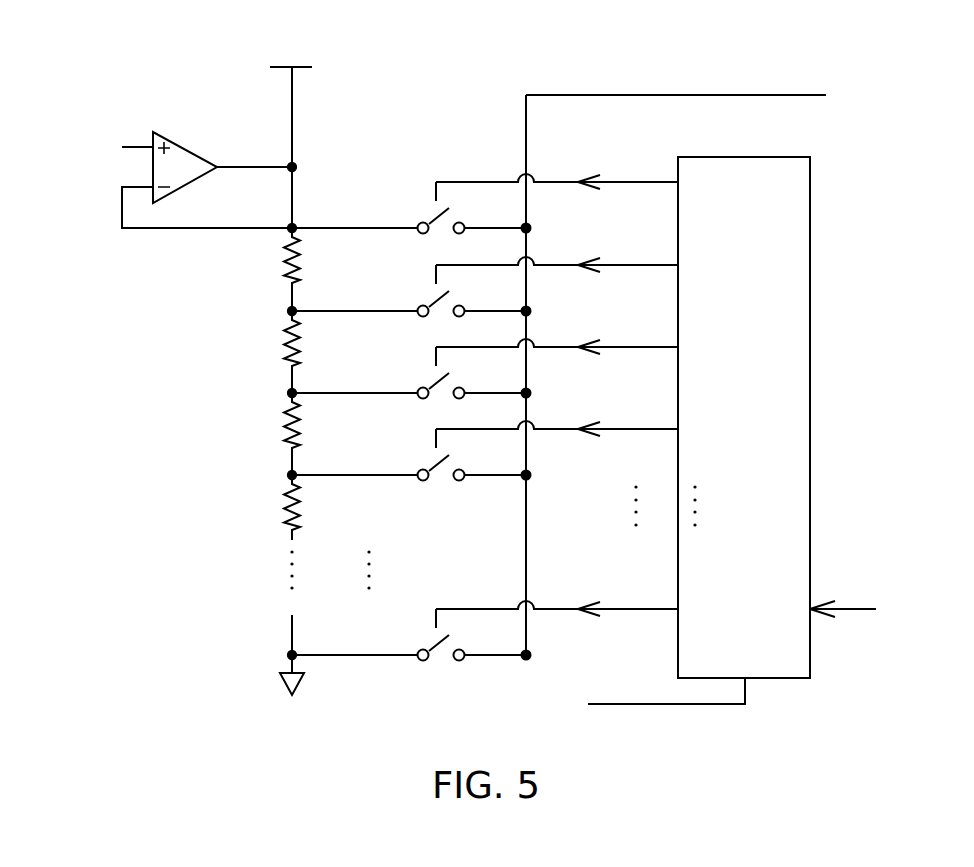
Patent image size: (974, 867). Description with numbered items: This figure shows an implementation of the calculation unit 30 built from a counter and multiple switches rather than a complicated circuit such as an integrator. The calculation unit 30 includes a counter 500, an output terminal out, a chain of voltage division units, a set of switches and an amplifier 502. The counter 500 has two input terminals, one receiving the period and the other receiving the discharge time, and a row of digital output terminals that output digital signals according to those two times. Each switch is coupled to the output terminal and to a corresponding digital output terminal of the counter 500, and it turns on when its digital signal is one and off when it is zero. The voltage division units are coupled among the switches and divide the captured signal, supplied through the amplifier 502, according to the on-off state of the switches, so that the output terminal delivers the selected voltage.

The calculation unit 30 is at (806, 62).
The counter 500 is at (783, 157).
The amplifier 502 is at (187, 145).